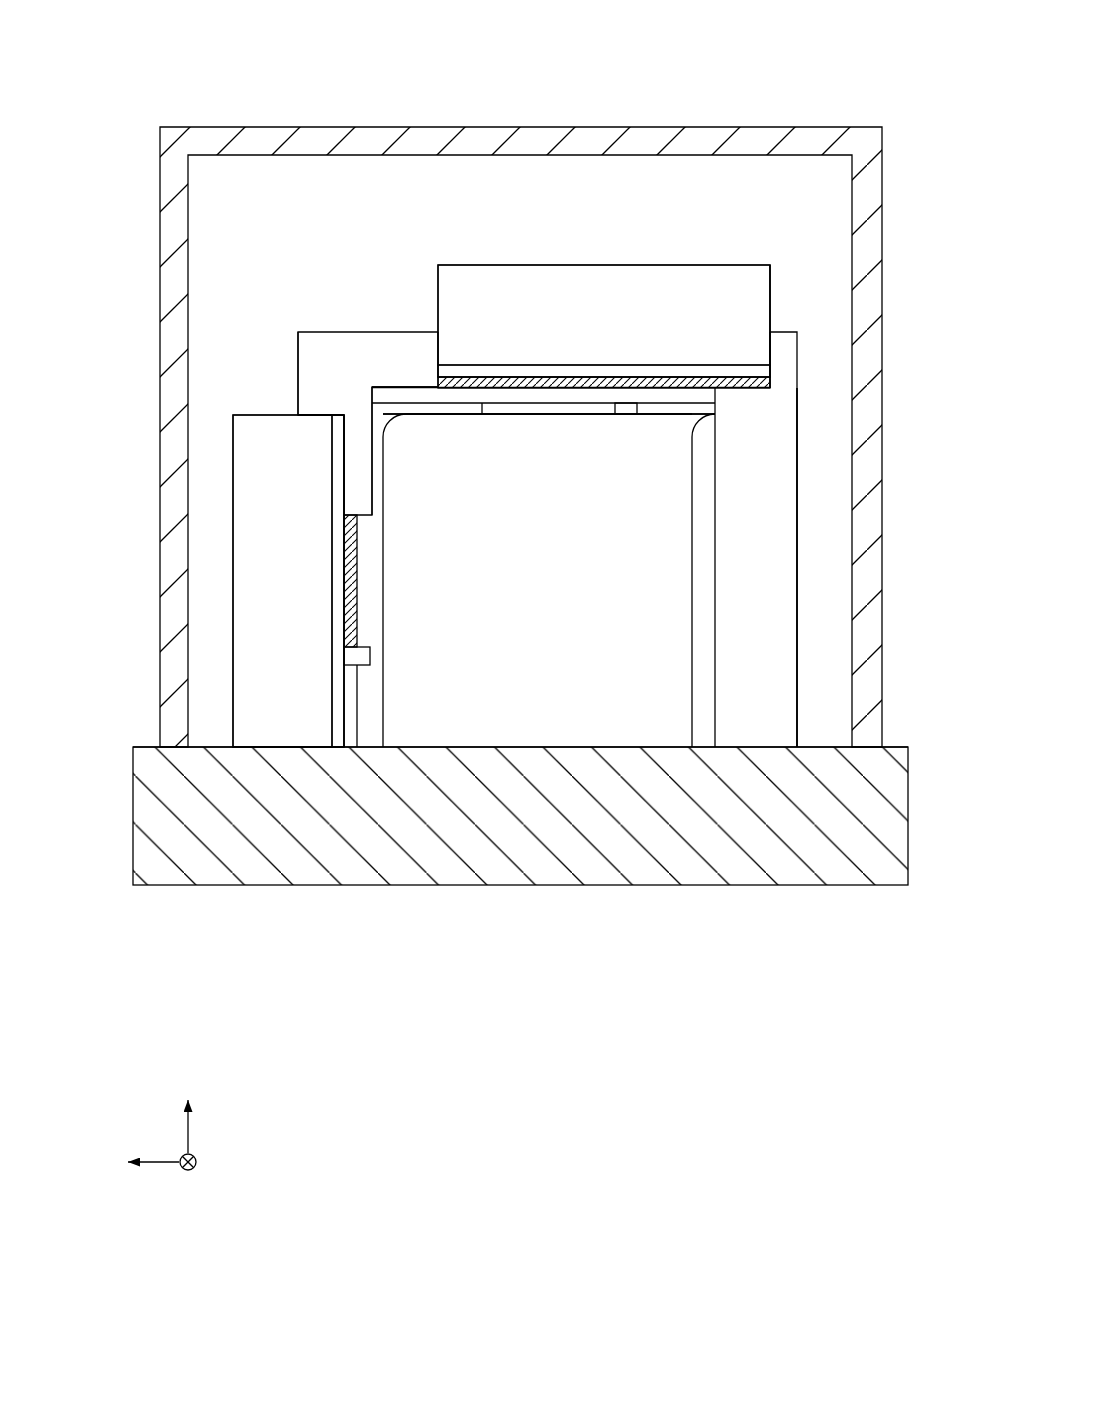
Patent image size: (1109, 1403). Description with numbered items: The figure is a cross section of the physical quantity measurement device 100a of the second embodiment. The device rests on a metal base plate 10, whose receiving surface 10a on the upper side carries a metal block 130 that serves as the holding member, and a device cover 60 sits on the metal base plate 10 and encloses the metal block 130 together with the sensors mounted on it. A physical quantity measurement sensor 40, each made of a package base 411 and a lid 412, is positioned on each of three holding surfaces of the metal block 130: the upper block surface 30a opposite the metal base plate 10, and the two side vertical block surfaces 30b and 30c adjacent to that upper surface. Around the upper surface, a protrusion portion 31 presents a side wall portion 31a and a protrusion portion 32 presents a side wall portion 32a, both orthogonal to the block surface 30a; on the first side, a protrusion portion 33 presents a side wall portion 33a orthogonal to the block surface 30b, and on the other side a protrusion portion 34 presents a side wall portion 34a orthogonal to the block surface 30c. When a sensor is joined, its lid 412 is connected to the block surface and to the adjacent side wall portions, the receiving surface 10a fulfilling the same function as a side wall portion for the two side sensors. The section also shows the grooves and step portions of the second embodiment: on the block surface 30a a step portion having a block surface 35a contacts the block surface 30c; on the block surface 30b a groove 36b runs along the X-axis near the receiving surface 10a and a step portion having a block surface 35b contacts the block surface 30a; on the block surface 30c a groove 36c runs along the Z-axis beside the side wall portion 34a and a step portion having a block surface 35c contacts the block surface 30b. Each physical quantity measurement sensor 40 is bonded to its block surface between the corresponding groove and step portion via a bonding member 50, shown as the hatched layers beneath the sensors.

The physical quantity measurement device 100a is at (936, 38).
The metal base plate 10 is at (888, 826).
The receiving surface 10a is at (896, 746).
The device cover 60 is at (878, 607).
The metal block 130 is at (800, 512).
The physical quantity measurement sensor 40 is at (940, 267).
The package base 411 is at (753, 283).
The lid 412 is at (753, 372).
The bonding member 50 is at (568, 379).
The protrusion portion 31 is at (333, 326).
The side wall portion 31a is at (363, 355).
The protrusion portion 32 is at (782, 327).
The side wall portion 32a is at (763, 348).
The protrusion portion 33 is at (296, 405).
The side wall portion 33a is at (313, 385).
The protrusion portion 34 is at (745, 576).
The side wall portion 34a is at (700, 428).
The block surface 30a is at (407, 386).
The block surface 30b is at (352, 568).
The block surface 30c is at (545, 405).
The block surface 35a is at (505, 402).
The block surface 35b is at (370, 446).
The block surface 35c is at (372, 423).
The groove 36b is at (356, 653).
The groove 36c is at (626, 417).